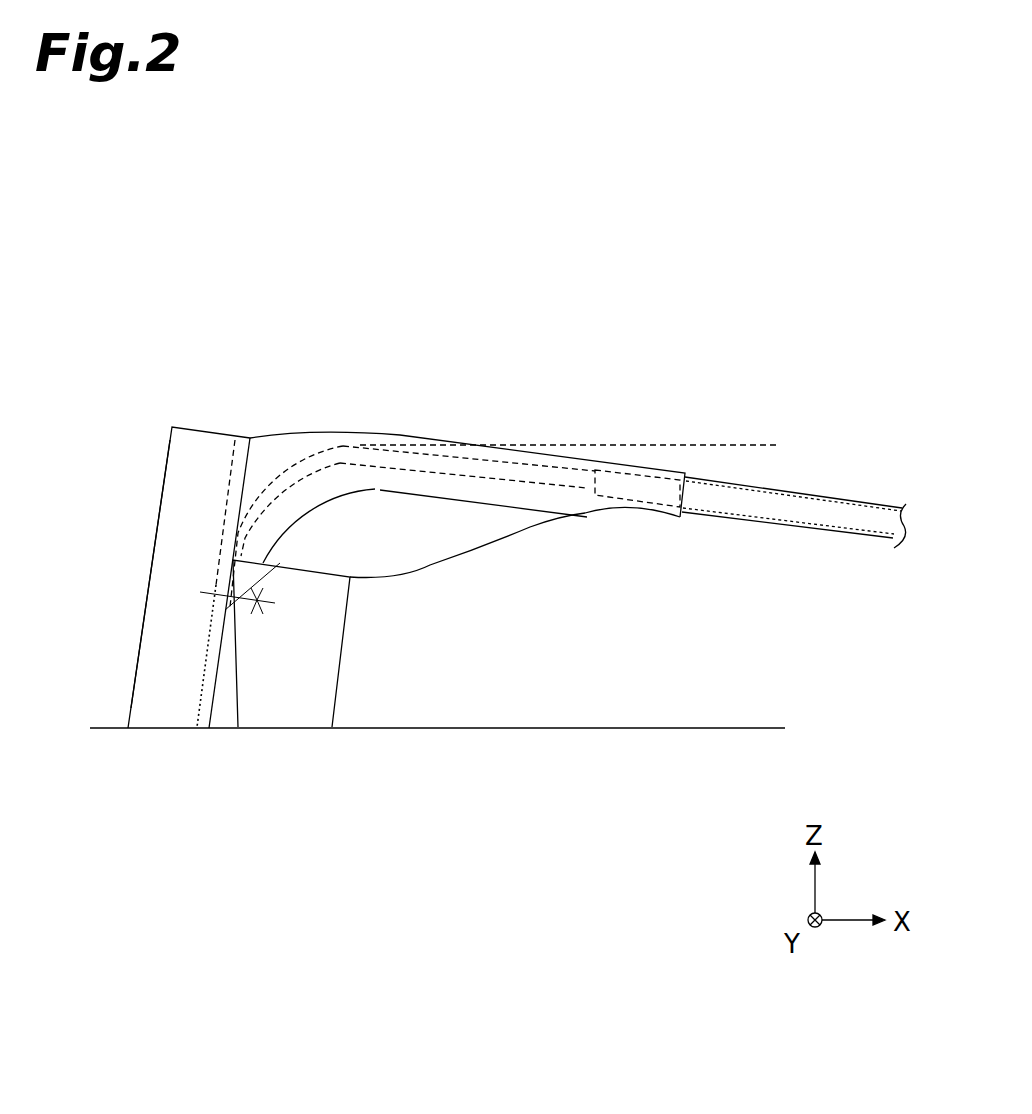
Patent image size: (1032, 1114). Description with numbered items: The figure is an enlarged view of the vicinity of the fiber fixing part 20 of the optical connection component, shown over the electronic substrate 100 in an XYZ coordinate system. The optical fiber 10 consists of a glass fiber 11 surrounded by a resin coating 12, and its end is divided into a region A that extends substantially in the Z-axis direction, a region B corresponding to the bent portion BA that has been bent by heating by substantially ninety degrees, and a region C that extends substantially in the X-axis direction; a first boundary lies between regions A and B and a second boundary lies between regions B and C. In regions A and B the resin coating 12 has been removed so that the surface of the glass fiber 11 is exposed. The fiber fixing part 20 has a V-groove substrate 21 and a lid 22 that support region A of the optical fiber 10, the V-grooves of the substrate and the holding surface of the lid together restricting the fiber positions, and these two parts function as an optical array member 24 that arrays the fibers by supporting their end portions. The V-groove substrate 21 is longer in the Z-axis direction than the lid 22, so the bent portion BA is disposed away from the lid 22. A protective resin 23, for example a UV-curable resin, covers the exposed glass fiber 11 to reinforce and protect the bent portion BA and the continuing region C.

The optical fiber 10 is at (810, 492).
The glass fiber 11 is at (553, 460).
The resin coating 12 is at (729, 488).
The fiber fixing part 20 is at (185, 392).
The V-groove substrate 21 is at (135, 681).
The lid 22 is at (338, 680).
The protective resin 23 is at (408, 433).
The optical array member 24 is at (140, 490).
The electronic substrate 100 is at (652, 728).